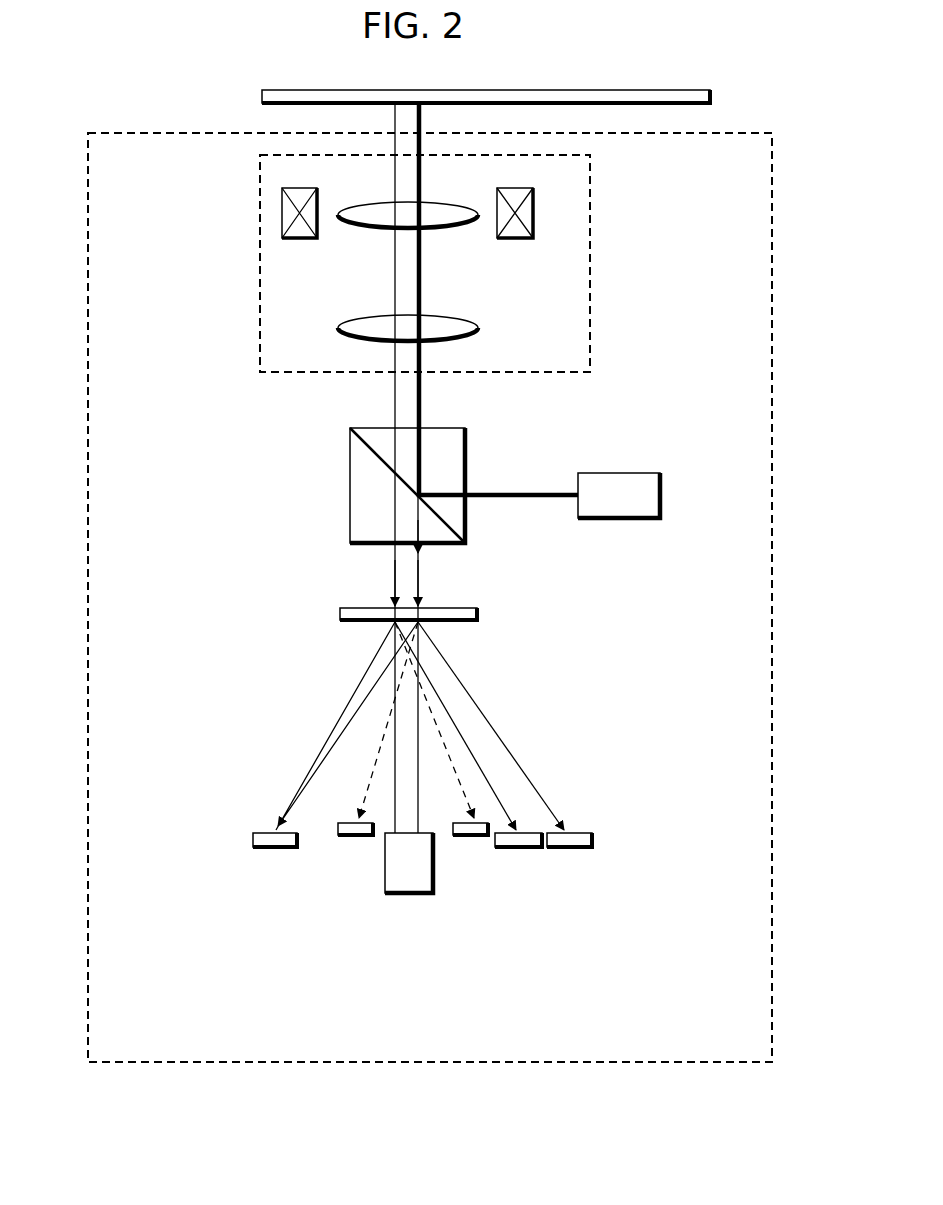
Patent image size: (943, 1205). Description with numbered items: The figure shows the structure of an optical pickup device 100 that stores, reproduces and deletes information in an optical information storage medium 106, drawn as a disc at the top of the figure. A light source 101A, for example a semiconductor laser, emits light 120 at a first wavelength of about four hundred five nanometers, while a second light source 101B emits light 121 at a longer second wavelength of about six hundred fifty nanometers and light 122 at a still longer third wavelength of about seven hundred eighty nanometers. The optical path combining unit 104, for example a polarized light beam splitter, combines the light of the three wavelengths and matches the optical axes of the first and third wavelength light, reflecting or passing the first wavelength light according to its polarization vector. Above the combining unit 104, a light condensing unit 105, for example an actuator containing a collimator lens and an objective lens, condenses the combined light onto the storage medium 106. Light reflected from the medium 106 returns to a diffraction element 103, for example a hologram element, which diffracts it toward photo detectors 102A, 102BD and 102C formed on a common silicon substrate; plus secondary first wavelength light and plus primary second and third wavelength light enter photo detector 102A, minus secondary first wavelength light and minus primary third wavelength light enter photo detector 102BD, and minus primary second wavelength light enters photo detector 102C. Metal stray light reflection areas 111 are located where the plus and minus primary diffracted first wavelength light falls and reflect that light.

The optical pickup device 100 is at (87, 437).
The optical information storage medium 106 is at (262, 97).
The light condensing unit 105 is at (277, 302).
The optical path combining unit 104 is at (350, 482).
The light at the first wavelength 120 is at (478, 493).
The light at the second wavelength 121 is at (395, 578).
The light at the third wavelength 122 is at (420, 576).
The light source 101A is at (615, 487).
The light source 101B is at (410, 893).
The diffraction element 103 is at (340, 612).
The photo detector 102A is at (277, 848).
The stray light reflection area 111 is at (355, 838).
The photo detector 102C is at (517, 848).
The photo detector 102BD is at (565, 848).